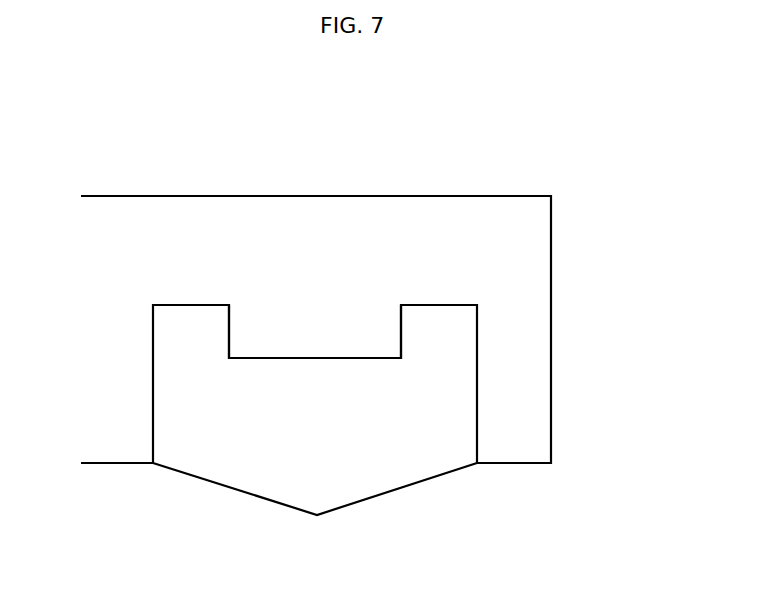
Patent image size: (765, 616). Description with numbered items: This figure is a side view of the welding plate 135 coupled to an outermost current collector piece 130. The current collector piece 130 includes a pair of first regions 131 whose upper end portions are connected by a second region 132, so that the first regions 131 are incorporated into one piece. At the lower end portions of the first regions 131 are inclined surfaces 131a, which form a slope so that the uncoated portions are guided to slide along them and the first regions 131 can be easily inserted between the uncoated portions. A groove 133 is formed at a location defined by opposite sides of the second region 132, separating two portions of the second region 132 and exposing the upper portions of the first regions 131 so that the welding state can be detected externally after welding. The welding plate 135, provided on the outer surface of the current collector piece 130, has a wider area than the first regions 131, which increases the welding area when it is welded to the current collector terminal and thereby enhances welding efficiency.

The current collector piece 130 is at (168, 152).
The first region 131 is at (458, 405).
The inclined surface 131a is at (338, 508).
The second region 132 is at (440, 318).
The groove 133 is at (317, 340).
The welding plate 135 is at (528, 302).